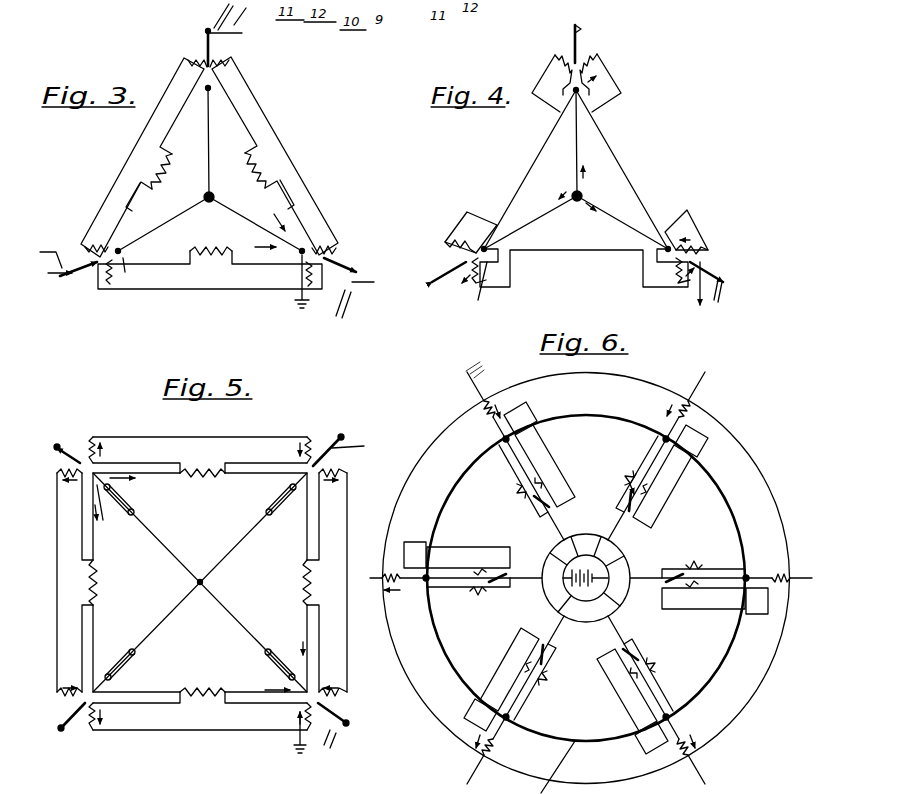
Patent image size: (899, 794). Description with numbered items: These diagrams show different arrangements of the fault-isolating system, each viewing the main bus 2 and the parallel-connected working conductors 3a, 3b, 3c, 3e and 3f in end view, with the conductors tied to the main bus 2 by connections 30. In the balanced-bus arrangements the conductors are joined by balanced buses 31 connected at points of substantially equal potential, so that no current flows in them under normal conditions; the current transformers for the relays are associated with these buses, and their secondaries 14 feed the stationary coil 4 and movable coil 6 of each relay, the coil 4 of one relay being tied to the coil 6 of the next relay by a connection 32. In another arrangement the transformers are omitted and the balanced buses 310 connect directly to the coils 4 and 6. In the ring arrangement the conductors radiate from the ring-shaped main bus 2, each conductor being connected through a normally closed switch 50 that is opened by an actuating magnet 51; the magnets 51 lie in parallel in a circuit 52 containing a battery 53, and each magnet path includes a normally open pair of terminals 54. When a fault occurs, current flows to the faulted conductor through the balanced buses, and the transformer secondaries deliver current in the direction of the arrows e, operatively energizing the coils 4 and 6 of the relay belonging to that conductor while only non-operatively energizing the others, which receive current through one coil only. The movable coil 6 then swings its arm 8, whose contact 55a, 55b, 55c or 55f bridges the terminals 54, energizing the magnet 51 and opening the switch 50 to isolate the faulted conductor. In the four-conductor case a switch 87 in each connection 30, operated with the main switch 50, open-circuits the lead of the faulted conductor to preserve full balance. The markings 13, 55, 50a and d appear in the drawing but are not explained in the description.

In FIG. 3, the main bus 2 is at (207, 205).
In FIG. 4, the main bus 2 is at (575, 206).
In FIG. 5, the main bus 2 is at (206, 582).
In FIG. 3, the connection 30 is at (228, 224).
In FIG. 4, the connection 30 is at (622, 218).
In FIG. 5, the connection 30 is at (234, 626).
In FIG. 3, the balanced bus 31 is at (168, 264).
In FIG. 5, the balanced bus 31 is at (245, 705).
In FIG. 3, the connection 32 is at (256, 290).
In FIG. 5, the connection 32 is at (202, 583).
In FIG. 3, the current transformer secondary 14 is at (222, 264).
In FIG. 5, the current transformer secondary 14 is at (200, 692).
In FIG. 3, the working conductor 3a is at (318, 222).
In FIG. 4, the working conductor 3a is at (668, 232).
In FIG. 5, the working conductor 3a is at (290, 688).
In FIG. 6, the working conductor 3a is at (708, 768).
In FIG. 3, the working conductor 3b is at (232, 84).
In FIG. 4, the working conductor 3b is at (590, 93).
In FIG. 5, the working conductor 3b is at (300, 477).
In FIG. 6, the working conductor 3b is at (788, 600).
In FIG. 3, the working conductor 3c is at (123, 272).
In FIG. 4, the working conductor 3c is at (488, 287).
In FIG. 5, the working conductor 3c is at (106, 510).
In FIG. 6, the working conductor 3c is at (704, 382).
In FIG. 5, the working conductor 3e is at (344, 630).
In FIG. 6, the working conductor 3f is at (470, 780).
In FIG. 3, the stationary coil 4 is at (96, 288).
In FIG. 4, the stationary coil 4 is at (712, 252).
In FIG. 5, the stationary coil 4 is at (340, 700).
In FIG. 6, the stationary coil 4 is at (540, 680).
In FIG. 3, the movable coil 6 is at (300, 316).
In FIG. 4, the movable coil 6 is at (690, 282).
In FIG. 5, the movable coil 6 is at (306, 730).
In FIG. 6, the movable coil 6 is at (522, 660).
In FIG. 3, the arm 8 is at (90, 276).
In FIG. 4, the arm 8 is at (578, 44).
In FIG. 5, the arm 8 is at (312, 445).
In FIG. 5, the contact rod 13 is at (348, 726).
In FIG. 3, the circuit 52 is at (185, 166).
In FIG. 6, the circuit 52 is at (560, 582).
In FIG. 6, the battery 53 is at (586, 590).
In FIG. 3, the terminals 54 is at (202, 149).
In FIG. 4, the terminals 54 is at (714, 289).
In FIG. 5, the terminals 54 is at (349, 604).
In FIG. 6, the terminals 54 is at (612, 648).
In FIG. 3, the movable contact 55 is at (358, 274).
In FIG. 4, the relay contact 55a is at (595, 275).
In FIG. 5, the relay contact 55a is at (344, 730).
In FIG. 6, the relay contact 55a is at (624, 640).
In FIG. 5, the relay contact 55b is at (345, 442).
In FIG. 6, the relay contact 55b is at (650, 560).
In FIG. 6, the relay contact 55c is at (620, 526).
In FIG. 6, the relay contact 55f is at (580, 640).
In FIG. 6, the switch 50 is at (680, 728).
In FIG. 6, the resistor 50a is at (790, 566).
In FIG. 6, the actuating magnet 51 is at (650, 752).
In FIG. 5, the switch 87 is at (292, 668).
In FIG. 4, the balanced bus 310 is at (572, 250).
In FIG. 3, the arrow e is at (218, 173).
In FIG. 4, the arrow e is at (580, 175).
In FIG. 5, the arrow e is at (202, 583).
In FIG. 6, the arrow e is at (582, 578).
In FIG. 6, the contact d is at (516, 414).